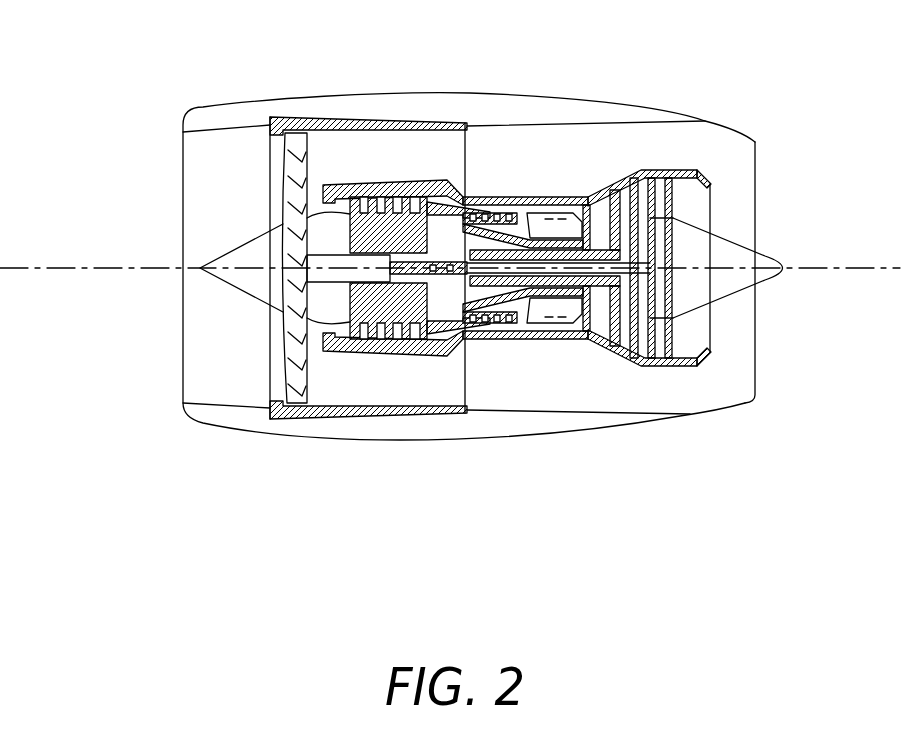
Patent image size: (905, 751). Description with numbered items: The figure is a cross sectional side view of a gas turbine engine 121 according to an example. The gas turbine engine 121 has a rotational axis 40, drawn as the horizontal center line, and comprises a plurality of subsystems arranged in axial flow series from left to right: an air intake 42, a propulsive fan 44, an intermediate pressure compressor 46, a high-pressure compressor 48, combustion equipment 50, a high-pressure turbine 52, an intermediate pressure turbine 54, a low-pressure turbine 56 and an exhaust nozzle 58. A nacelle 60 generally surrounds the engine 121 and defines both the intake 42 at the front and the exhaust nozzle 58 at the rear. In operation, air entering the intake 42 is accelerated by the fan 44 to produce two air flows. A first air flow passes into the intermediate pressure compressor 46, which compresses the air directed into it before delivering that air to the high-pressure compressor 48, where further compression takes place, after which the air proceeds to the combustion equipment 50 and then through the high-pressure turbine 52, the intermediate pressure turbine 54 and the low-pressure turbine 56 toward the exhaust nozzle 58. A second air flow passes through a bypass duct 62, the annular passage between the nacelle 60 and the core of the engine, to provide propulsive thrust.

The gas turbine engine 121 is at (150, 170).
The rotational axis 40 is at (165, 268).
The air intake 42 is at (245, 127).
The propulsive fan 44 is at (285, 365).
The intermediate pressure compressor 46 is at (385, 350).
The high-pressure compressor 48 is at (485, 213).
The combustion equipment 50 is at (553, 320).
The high-pressure turbine 52 is at (588, 336).
The intermediate pressure turbine 54 is at (617, 190).
The low-pressure turbine 56 is at (638, 358).
The exhaust nozzle 58 is at (756, 385).
The nacelle 60 is at (621, 106).
The bypass duct 62 is at (438, 168).